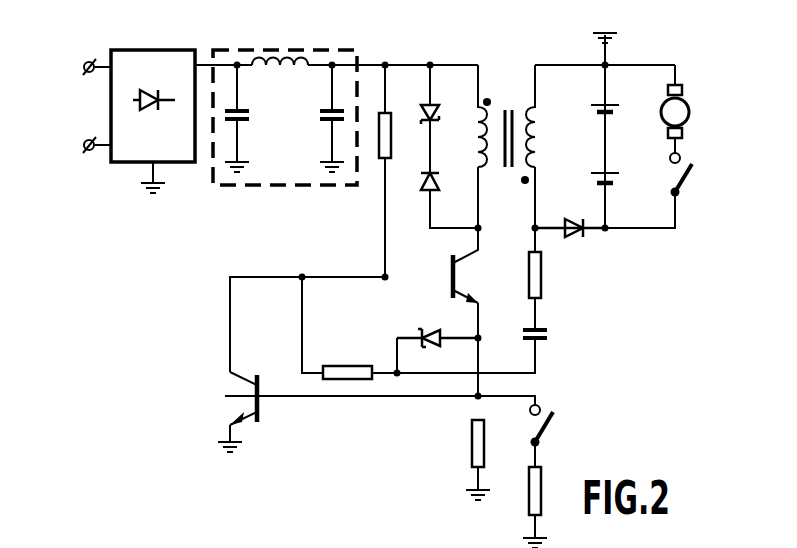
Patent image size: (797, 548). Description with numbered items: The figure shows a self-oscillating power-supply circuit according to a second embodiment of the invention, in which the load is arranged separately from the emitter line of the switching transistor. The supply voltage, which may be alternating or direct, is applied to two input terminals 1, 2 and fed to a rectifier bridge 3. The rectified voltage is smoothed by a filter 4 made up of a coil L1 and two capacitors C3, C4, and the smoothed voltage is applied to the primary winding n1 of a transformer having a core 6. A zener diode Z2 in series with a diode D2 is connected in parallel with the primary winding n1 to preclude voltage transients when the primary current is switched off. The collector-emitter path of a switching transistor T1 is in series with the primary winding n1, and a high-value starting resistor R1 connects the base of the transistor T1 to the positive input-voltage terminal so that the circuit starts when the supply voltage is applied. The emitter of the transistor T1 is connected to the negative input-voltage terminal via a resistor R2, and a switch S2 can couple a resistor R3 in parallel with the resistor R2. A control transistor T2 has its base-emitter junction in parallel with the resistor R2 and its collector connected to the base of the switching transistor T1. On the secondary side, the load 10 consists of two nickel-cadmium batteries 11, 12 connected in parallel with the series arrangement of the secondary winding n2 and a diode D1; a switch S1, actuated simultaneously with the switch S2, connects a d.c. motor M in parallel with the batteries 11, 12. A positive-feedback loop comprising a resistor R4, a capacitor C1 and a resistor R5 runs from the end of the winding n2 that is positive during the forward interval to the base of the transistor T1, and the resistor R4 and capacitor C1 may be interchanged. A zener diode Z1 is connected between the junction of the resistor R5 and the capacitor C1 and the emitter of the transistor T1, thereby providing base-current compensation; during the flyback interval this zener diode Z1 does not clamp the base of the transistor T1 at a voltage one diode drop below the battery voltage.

The input terminal 1 is at (96, 79).
The input terminal 2 is at (96, 159).
The rectifier bridge 3 is at (152, 50).
The filter 4 is at (258, 50).
The core 6 is at (514, 90).
The load 10 is at (648, 138).
The nickel-cadmium battery 11 is at (612, 103).
The nickel-cadmium battery 12 is at (612, 185).
The coil L1 is at (262, 68).
The capacitor C3 is at (240, 121).
The capacitor C4 is at (329, 121).
The resistor R1 is at (391, 123).
The zener diode Z2 is at (428, 100).
The diode D2 is at (436, 181).
The primary winding n1 is at (478, 154).
The secondary winding n2 is at (537, 149).
The d.c. motor M is at (689, 115).
The switch S1 is at (684, 186).
The diode D1 is at (570, 238).
The resistor R4 is at (541, 272).
The capacitor C1 is at (547, 339).
The switching transistor T1 is at (458, 280).
The zener diode Z1 is at (414, 330).
The resistor R5 is at (337, 366).
The control transistor T2 is at (228, 412).
The resistor R2 is at (472, 448).
The switch S2 is at (548, 428).
The resistor R3 is at (529, 500).